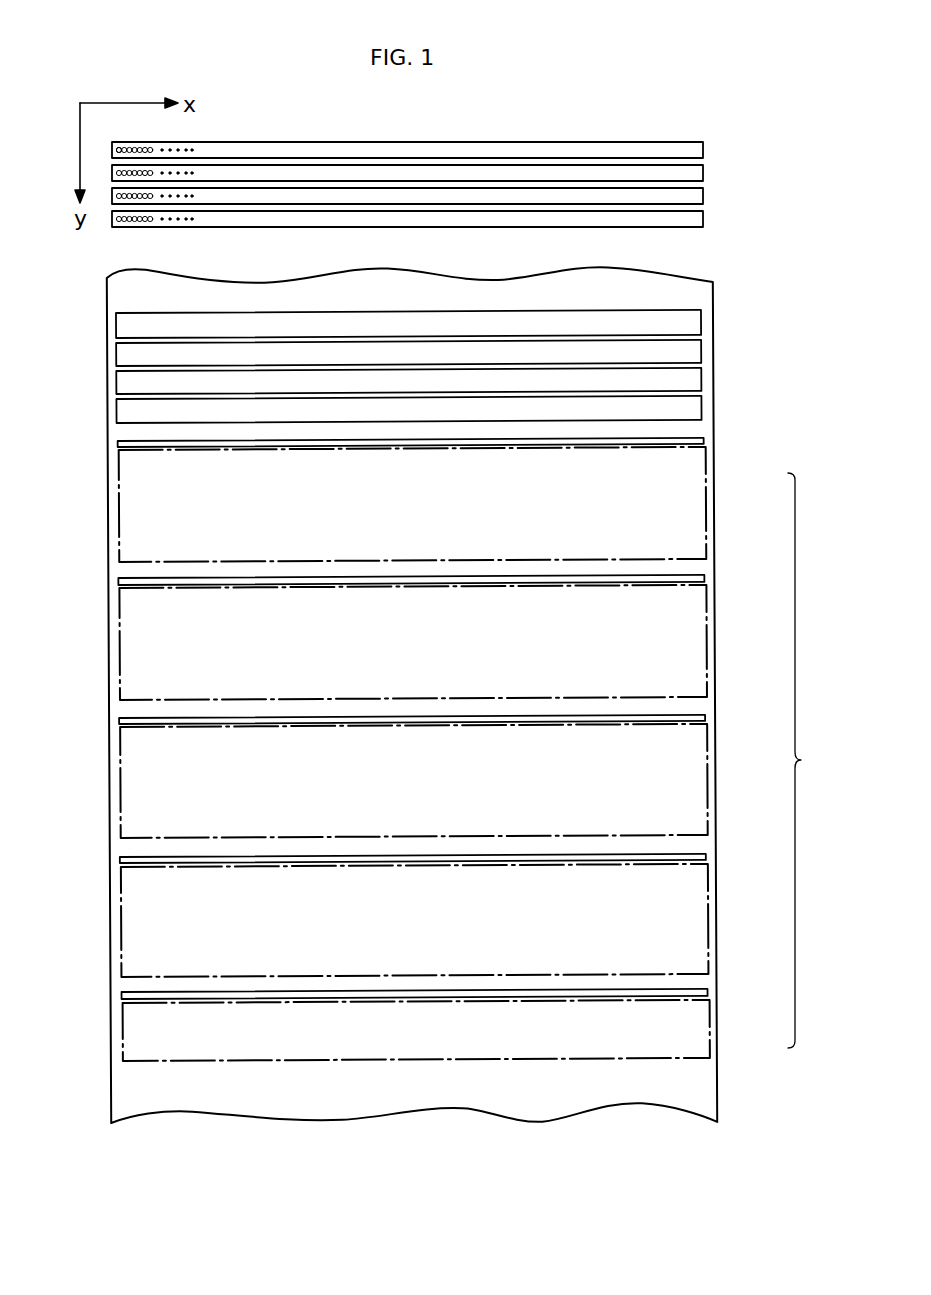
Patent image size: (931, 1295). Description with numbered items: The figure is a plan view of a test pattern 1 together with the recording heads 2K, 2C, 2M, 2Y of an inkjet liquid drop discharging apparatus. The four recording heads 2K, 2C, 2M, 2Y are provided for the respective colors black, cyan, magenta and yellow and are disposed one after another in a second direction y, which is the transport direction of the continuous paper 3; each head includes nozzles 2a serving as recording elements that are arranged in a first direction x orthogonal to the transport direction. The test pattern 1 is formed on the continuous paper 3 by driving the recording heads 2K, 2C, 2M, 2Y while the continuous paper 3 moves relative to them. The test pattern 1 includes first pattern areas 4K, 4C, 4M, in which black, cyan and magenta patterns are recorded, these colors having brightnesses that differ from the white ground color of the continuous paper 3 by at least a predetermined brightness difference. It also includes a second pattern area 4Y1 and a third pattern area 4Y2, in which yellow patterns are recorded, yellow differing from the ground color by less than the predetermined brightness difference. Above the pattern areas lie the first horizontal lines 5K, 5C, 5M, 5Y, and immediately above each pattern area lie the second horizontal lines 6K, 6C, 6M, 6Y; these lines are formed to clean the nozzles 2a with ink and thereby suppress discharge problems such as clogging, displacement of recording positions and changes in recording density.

The test pattern 1 is at (804, 760).
The nozzles 2a is at (150, 148).
The recording head 2K is at (705, 150).
The recording head 2C is at (705, 173).
The recording head 2M is at (705, 196).
The recording head 2Y is at (705, 219).
The continuous paper 3 is at (107, 414).
The first pattern area 4K is at (707, 505).
The first pattern area 4C is at (707, 643).
The first pattern area 4M is at (707, 780).
The third pattern area 4Y2 is at (709, 912).
The second pattern area 4Y1 is at (709, 1033).
The first horizontal line 5K is at (705, 322).
The first horizontal line 5C is at (705, 350).
The first horizontal line 5M is at (705, 378).
The first horizontal line 5Y is at (705, 406).
The second horizontal line 6K is at (121, 444).
The second horizontal line 6C is at (121, 582).
The second horizontal line 6M is at (121, 721).
The second horizontal line 6Y is at (121, 860).